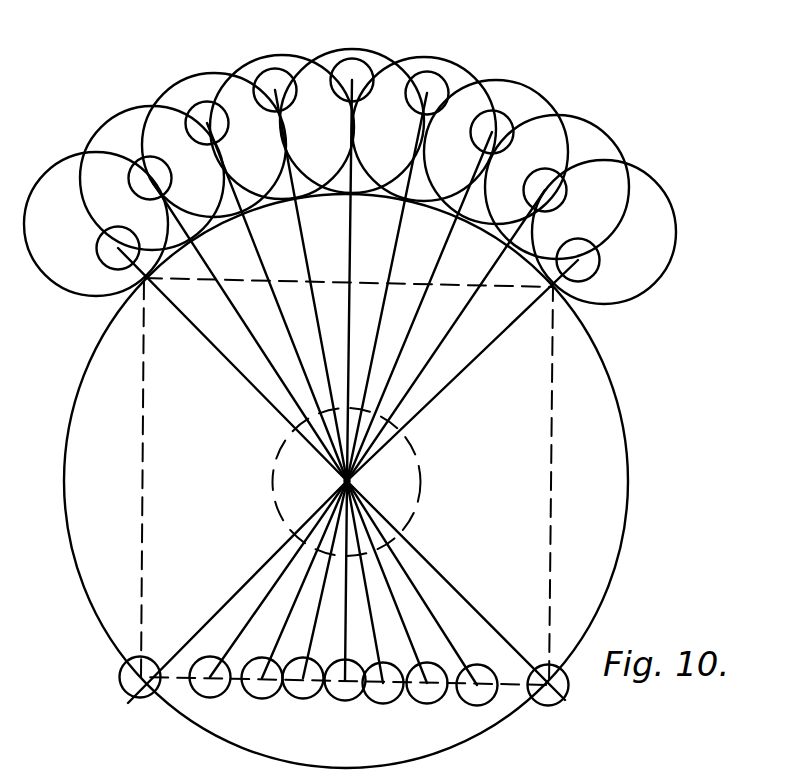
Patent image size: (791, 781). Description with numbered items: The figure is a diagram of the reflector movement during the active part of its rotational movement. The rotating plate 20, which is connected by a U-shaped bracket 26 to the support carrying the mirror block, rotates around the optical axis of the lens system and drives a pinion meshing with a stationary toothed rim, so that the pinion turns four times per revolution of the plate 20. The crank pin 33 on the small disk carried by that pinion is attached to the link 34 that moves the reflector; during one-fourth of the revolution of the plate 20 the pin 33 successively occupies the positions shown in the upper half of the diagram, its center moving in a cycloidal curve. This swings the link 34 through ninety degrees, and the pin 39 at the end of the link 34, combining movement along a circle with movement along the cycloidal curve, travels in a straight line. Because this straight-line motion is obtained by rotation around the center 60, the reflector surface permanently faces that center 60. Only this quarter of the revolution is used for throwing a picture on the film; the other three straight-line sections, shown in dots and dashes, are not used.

The rotating plate 20 is at (621, 467).
The U-shaped bracket 26 is at (146, 780).
The crank pin 33 is at (332, 63).
The link 34 is at (243, 383).
The pin 39 is at (343, 698).
The center 60 is at (344, 481).